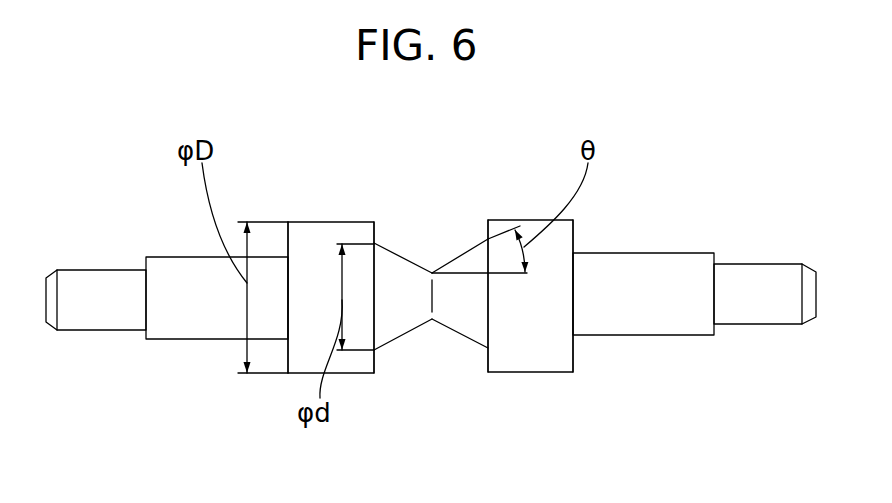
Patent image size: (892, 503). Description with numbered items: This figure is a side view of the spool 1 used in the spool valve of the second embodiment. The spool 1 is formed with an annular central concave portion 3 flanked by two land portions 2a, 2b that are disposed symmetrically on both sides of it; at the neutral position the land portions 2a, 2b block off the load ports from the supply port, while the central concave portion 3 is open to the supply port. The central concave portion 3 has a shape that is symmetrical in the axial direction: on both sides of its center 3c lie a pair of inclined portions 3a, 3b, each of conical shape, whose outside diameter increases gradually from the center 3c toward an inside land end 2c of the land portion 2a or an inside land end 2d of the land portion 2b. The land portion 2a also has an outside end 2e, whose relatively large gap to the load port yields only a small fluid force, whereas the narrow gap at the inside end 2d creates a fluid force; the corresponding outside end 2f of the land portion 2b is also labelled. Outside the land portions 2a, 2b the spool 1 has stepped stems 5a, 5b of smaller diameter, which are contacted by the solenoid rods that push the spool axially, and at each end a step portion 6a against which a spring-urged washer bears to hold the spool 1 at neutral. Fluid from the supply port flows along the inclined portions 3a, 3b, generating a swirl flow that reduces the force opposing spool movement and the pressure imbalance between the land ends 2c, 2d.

The spool 1 is at (744, 187).
The land portion 2a is at (325, 222).
The land portion 2b is at (520, 220).
The inside land end 2c is at (374, 235).
The inside land end 2d is at (488, 233).
The outside end 2e is at (288, 246).
The outer end face of second large-diameter portion 2f is at (573, 238).
The central concave portion 3 is at (442, 301).
The inclined portion 3a is at (397, 338).
The inclined portion 3b is at (468, 337).
The center 3c is at (433, 272).
The stepped stem 5a is at (188, 328).
The stepped stem 5b is at (657, 322).
The step portion 6a is at (139, 335).